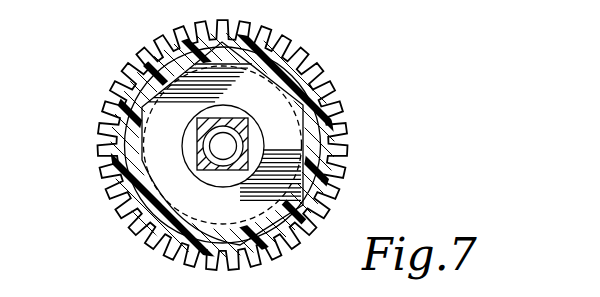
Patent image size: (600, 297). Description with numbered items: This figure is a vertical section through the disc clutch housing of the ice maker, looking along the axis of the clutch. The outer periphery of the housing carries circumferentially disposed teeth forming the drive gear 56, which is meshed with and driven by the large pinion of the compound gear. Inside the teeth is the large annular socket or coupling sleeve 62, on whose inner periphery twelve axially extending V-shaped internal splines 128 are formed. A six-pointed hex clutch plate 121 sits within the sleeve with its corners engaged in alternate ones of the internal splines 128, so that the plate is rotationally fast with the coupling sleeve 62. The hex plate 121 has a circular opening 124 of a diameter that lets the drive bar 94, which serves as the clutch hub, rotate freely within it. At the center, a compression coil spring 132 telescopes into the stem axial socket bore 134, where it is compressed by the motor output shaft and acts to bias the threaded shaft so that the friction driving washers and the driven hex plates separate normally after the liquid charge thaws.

The drive gear 56 is at (328, 103).
The coupling sleeve 62 is at (330, 143).
The V-shaped internal splines 128 is at (260, 65).
The hex clutch plate 121 is at (113, 147).
The stem axial socket bore 134 is at (197, 133).
The circular opening 124 is at (223, 108).
The compression coil spring 132 is at (247, 133).
The drive bar 94 is at (202, 167).